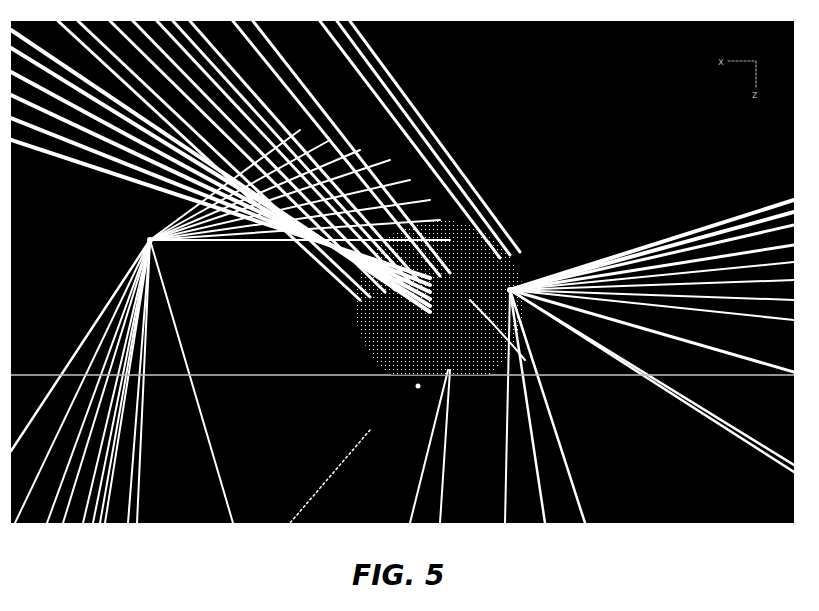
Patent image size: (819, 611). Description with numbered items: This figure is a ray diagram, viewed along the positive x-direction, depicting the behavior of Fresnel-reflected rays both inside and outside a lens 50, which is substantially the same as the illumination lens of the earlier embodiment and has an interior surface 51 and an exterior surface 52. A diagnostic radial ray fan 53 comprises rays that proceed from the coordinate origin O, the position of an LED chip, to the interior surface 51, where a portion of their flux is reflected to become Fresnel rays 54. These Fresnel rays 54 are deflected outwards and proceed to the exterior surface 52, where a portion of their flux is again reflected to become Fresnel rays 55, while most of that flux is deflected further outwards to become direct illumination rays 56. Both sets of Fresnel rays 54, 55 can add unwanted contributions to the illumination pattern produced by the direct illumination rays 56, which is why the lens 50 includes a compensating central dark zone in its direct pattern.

The lens 50 is at (291, 426).
The interior surface 51 is at (520, 358).
The exterior surface 52 is at (645, 112).
The diagnostic radial ray fan 53 is at (405, 300).
The Fresnel rays 54 is at (540, 275).
The Fresnel rays 55 is at (150, 240).
The direct illumination rays 56 is at (140, 58).
The coordinate origin O is at (415, 389).